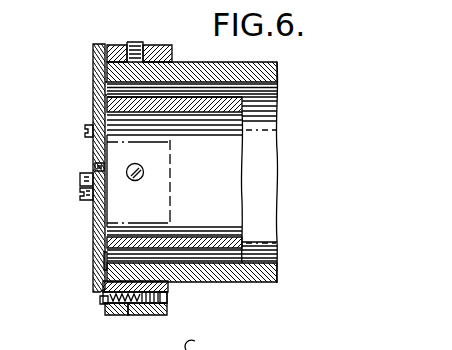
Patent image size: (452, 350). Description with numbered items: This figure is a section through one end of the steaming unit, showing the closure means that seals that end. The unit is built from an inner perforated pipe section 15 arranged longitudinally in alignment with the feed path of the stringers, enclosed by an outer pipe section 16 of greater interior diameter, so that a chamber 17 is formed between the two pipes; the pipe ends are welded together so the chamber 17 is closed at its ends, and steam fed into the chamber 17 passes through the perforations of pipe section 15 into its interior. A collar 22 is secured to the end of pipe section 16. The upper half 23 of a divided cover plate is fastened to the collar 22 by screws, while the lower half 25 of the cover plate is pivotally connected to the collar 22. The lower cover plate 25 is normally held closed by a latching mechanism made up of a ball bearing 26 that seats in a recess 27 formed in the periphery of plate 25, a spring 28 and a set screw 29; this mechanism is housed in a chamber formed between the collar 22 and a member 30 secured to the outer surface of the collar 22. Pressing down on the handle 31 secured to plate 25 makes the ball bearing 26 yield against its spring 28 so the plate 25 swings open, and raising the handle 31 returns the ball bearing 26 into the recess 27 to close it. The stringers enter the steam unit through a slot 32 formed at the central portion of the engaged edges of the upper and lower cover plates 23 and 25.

The perforated pipe section 15 is at (243, 103).
The pipe section 16 is at (278, 72).
The chamber 17 is at (217, 253).
The collar 22 is at (158, 47).
The upper half of cover plate 23 is at (101, 83).
The lower half of cover plate 25 is at (103, 262).
The ball bearing 26 is at (106, 308).
The recess 27 is at (100, 301).
The spring 28 is at (128, 316).
The set screw 29 is at (168, 304).
The member 30 is at (158, 316).
The handle 31 is at (80, 180).
The slot 32 is at (96, 166).